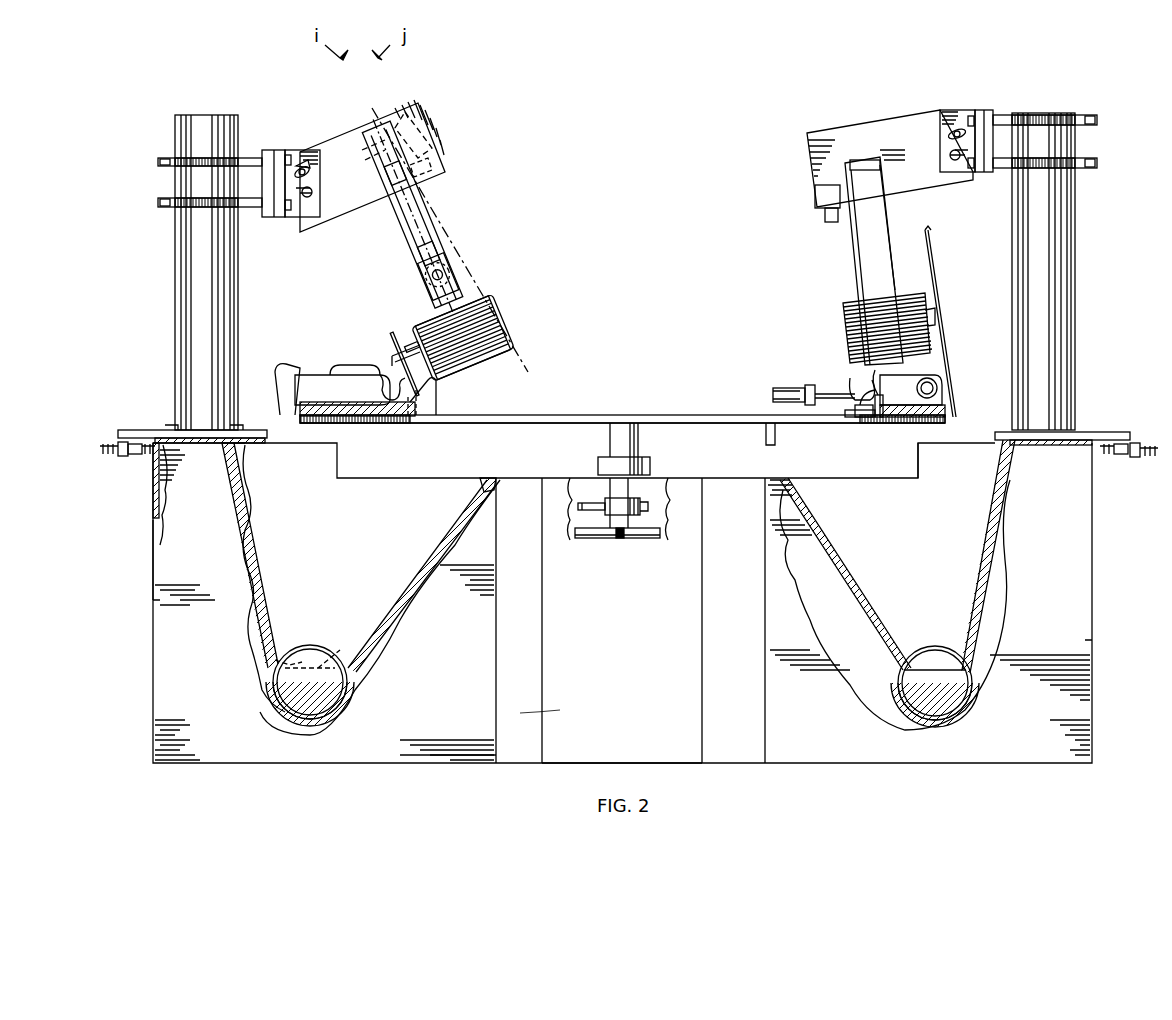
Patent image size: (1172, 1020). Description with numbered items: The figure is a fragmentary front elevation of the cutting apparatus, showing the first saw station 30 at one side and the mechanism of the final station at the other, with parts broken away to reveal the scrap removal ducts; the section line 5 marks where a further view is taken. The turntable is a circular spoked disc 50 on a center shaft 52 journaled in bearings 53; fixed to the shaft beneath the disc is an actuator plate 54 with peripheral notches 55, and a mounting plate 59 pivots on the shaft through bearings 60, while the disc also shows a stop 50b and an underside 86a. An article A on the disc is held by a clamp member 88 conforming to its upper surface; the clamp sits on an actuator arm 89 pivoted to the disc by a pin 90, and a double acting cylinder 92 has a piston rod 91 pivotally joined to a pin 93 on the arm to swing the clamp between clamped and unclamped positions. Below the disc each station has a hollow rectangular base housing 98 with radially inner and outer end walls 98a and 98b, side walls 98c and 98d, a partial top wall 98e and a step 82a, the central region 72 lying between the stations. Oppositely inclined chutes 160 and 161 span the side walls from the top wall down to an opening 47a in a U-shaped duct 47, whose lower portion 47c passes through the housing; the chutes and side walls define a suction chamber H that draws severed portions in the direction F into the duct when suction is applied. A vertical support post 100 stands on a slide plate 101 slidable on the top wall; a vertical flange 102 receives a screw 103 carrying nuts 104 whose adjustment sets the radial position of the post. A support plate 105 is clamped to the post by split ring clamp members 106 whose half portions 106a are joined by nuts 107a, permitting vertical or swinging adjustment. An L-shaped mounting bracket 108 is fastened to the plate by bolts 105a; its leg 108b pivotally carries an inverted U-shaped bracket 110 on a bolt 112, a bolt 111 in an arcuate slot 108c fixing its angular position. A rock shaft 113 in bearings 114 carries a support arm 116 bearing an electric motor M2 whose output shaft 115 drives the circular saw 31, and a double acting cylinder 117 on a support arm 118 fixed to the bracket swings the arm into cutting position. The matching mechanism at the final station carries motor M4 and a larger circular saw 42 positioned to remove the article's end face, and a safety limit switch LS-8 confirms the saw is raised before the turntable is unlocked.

The section line 5- 5 is at (372, 108).
The first saw station 30 is at (160, 348).
The circular saw 31 is at (392, 362).
The circular saw 42 is at (930, 268).
The U-shaped duct 47 is at (265, 702).
The opening 47a is at (275, 655).
The pipe trough 47c is at (348, 655).
The circular spoked disc 50 is at (670, 415).
The table stop 50b is at (766, 440).
The center shaft 52 is at (640, 435).
The bearings 53 is at (648, 465).
The actuator plate 54 is at (648, 538).
The notches 55 is at (618, 538).
The mounting plate 59 is at (580, 520).
The bearings 60 is at (608, 500).
The center compartment 72 is at (624, 647).
The frame step 82a is at (946, 430).
The table underside 86a is at (430, 423).
The article engaging clamp member 88 is at (358, 362).
The actuator arm 89 is at (855, 380).
The pin 90 is at (860, 405).
The piston rod 91 is at (850, 405).
The double acting cylinder 92 is at (790, 388).
The pin 93 is at (880, 405).
The base housing member 98 is at (150, 688).
The radially inner end wall 98a is at (500, 498).
The radially outer end wall 98b is at (153, 500).
The side wall 98c is at (384, 536).
The side wall 98d is at (460, 690).
The partial top wall 98e is at (265, 448).
The support post 100 is at (1050, 262).
The slide plate 101 is at (155, 428).
The vertical flange portion 102 is at (117, 438).
The screw 103 is at (103, 446).
The nuts 104 is at (122, 458).
The support plate 105 is at (268, 152).
The bolts 105a is at (285, 148).
The split ring clamp members 106 is at (165, 222).
The split half portions 106a is at (1060, 165).
The nuts 107a is at (168, 156).
The L-shaped mounting bracket 108 is at (280, 217).
The leg 108b is at (305, 217).
The arcuate slot 108c is at (308, 175).
The inverted U-shaped bracket 110 is at (410, 108).
The bolt 111 is at (298, 155).
The bolt 112 is at (631, 175).
The rock shaft 113 is at (425, 172).
The bearings 114 is at (428, 138).
The output shaft 115 is at (422, 335).
The support arm 116 is at (430, 295).
The double acting cylinder 117 is at (440, 240).
The support arm 118 is at (438, 208).
The chute 160 is at (408, 568).
The chute 161 is at (258, 558).
The article A is at (345, 398).
The fluid F is at (145, 568).
The suction creating chamber H is at (304, 598).
The motor M2 is at (470, 378).
The saw motor M4 is at (845, 324).
The safety limit switch LS-8 is at (825, 218).